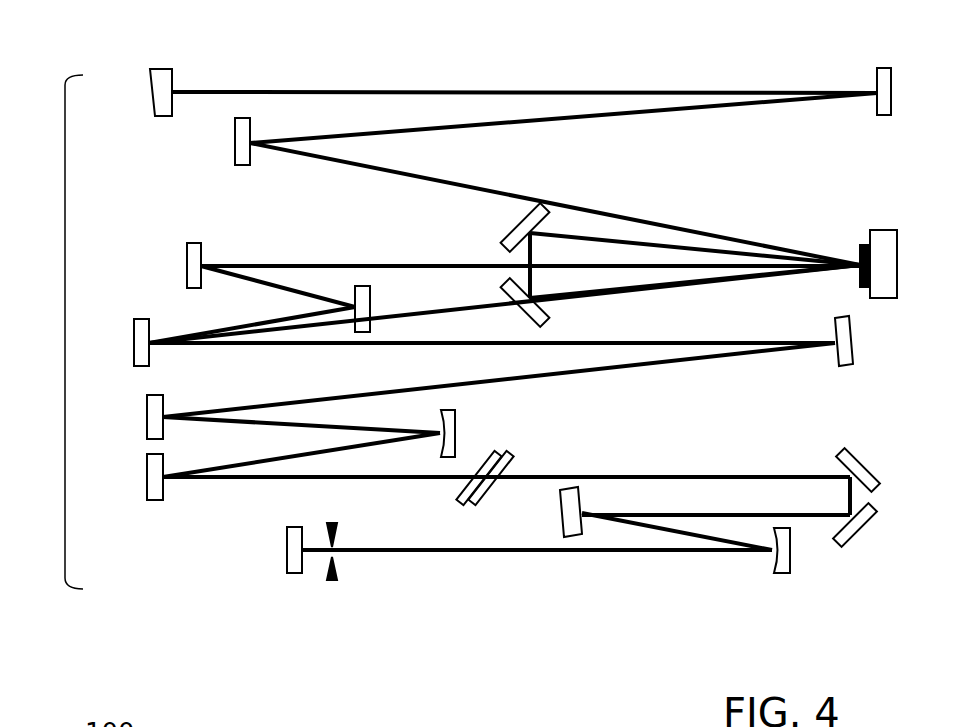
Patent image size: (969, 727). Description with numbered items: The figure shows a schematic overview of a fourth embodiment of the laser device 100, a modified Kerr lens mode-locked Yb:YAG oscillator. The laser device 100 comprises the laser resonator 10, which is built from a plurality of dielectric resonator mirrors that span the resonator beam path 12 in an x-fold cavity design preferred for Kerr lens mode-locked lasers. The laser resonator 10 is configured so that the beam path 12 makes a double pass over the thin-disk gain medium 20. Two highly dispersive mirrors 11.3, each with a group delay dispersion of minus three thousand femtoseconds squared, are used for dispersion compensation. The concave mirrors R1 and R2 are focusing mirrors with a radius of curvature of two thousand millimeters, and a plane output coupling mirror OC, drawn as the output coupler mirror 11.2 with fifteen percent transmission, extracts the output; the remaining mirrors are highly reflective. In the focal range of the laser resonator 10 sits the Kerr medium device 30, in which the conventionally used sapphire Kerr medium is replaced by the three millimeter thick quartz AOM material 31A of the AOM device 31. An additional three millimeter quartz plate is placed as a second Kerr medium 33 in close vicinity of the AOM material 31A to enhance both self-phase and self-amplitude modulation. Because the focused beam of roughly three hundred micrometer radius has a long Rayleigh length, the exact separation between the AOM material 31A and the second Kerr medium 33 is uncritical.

The laser device 100 is at (83, 60).
The laser resonator 10 is at (65, 327).
The output coupling mirror OC is at (187, 66).
The output coupler mirror 11.2 is at (163, 105).
The highly dispersive mirrors 11.3 is at (201, 268).
The resonator beam path 12 is at (618, 110).
The gain medium 20 is at (858, 243).
The Kerr medium device 30 is at (513, 497).
The AOM device 31 is at (490, 485).
The AOM material 31A is at (490, 478).
The second Kerr medium 33 is at (470, 492).
The concave mirror R1 is at (462, 430).
The concave mirror R2 is at (795, 561).